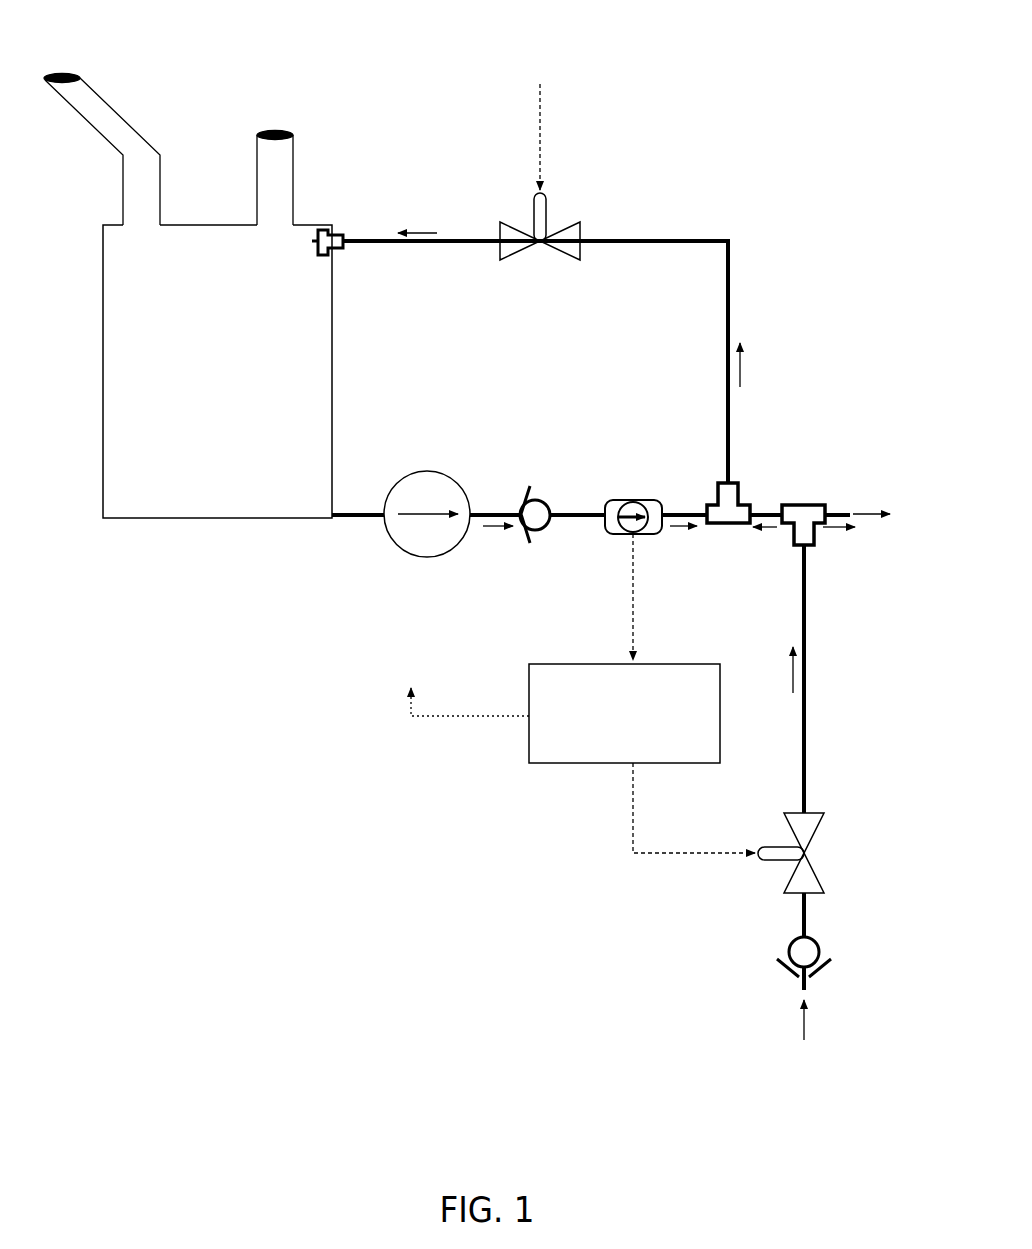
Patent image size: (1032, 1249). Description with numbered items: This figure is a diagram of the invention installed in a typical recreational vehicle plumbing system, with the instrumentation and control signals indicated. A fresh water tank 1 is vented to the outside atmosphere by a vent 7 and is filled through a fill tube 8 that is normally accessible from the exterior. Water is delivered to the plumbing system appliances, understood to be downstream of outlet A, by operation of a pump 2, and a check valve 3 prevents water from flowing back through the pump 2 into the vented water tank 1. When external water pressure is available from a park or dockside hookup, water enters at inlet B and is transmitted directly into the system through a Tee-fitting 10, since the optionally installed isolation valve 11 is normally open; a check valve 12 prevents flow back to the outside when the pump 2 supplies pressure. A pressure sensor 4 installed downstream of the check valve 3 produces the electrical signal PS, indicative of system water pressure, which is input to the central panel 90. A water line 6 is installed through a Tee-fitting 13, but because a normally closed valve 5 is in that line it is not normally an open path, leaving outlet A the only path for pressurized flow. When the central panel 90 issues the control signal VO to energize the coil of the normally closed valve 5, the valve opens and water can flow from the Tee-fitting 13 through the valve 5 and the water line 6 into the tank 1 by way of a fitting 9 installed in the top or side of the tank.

The fresh water tank 1 is at (213, 525).
The pump 2 is at (397, 557).
The check valve 3 is at (520, 487).
The pressure sensor 4 is at (637, 495).
The normally closed valve 5 is at (582, 215).
The water line 6 is at (700, 250).
The vent 7 is at (277, 128).
The fill tube 8 is at (67, 70).
The fitting 9 is at (338, 230).
The Tee-fitting 10 is at (803, 500).
The isolation valve 11 is at (777, 888).
The check valve 12 is at (793, 980).
The Tee-fitting 13 is at (738, 483).
The central panel 90 is at (522, 763).